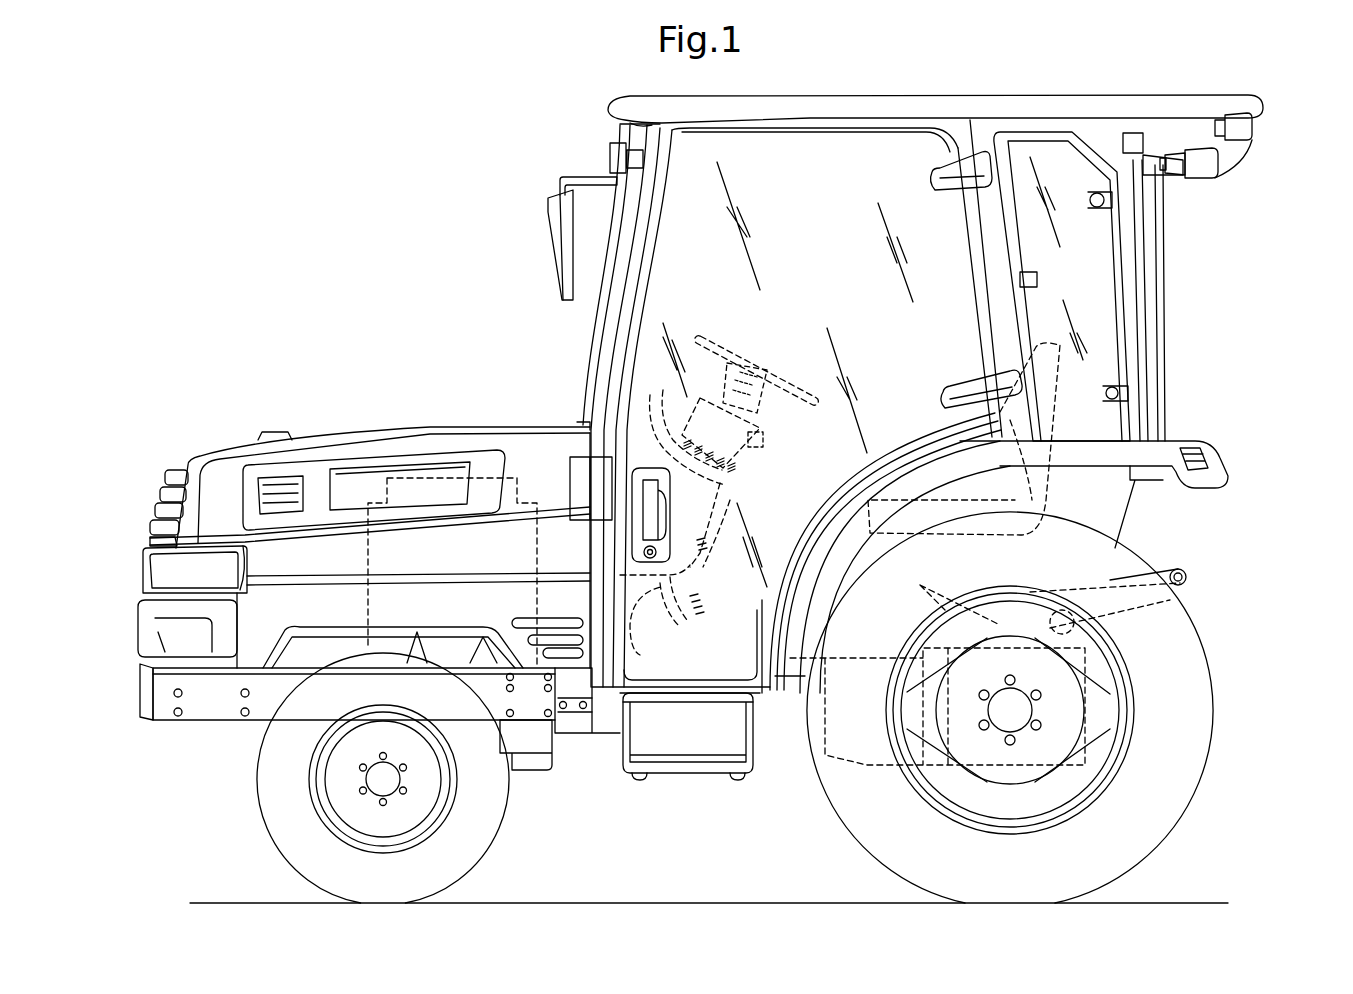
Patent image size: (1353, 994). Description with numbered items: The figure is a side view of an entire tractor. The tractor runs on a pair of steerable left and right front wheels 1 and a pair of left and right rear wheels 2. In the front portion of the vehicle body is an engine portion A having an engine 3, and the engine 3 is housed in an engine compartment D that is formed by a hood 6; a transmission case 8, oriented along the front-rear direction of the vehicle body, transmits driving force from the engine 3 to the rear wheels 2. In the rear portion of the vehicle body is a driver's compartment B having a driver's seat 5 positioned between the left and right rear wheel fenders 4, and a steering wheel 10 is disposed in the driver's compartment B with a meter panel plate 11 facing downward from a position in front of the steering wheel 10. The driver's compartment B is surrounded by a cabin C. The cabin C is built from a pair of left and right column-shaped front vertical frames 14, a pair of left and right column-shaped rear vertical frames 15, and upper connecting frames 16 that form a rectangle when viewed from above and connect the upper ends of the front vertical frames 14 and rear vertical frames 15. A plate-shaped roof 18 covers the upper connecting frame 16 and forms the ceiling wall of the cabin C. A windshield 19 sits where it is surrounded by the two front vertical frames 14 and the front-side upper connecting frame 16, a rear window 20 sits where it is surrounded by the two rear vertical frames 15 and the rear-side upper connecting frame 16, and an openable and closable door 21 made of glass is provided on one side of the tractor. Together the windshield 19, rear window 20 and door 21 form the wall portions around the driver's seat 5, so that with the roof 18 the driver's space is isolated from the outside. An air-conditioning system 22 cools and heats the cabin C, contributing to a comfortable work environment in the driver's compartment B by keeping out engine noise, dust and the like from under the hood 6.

The front wheels 1 is at (262, 798).
The rear wheels 2 is at (1190, 783).
The engine 3 is at (465, 466).
The rear wheel fenders 4 is at (1170, 455).
The driver's seat 5 is at (975, 537).
The hood 6 is at (322, 432).
The transmission case 8 is at (790, 757).
The steering wheel 10 is at (765, 362).
The meter panel plate 11 is at (645, 390).
The front vertical frames 14 is at (640, 228).
The rear vertical frames 15 is at (1143, 328).
The upper connecting frames 16 is at (805, 124).
The roof 18 is at (1025, 97).
The windshield 19 is at (585, 258).
The rear window 20 is at (1160, 258).
The door 21 is at (645, 340).
The air-conditioning system 22 is at (1208, 138).
The engine portion A is at (375, 425).
The driver's compartment B is at (860, 175).
The cabin C is at (608, 99).
The engine compartment D is at (545, 480).